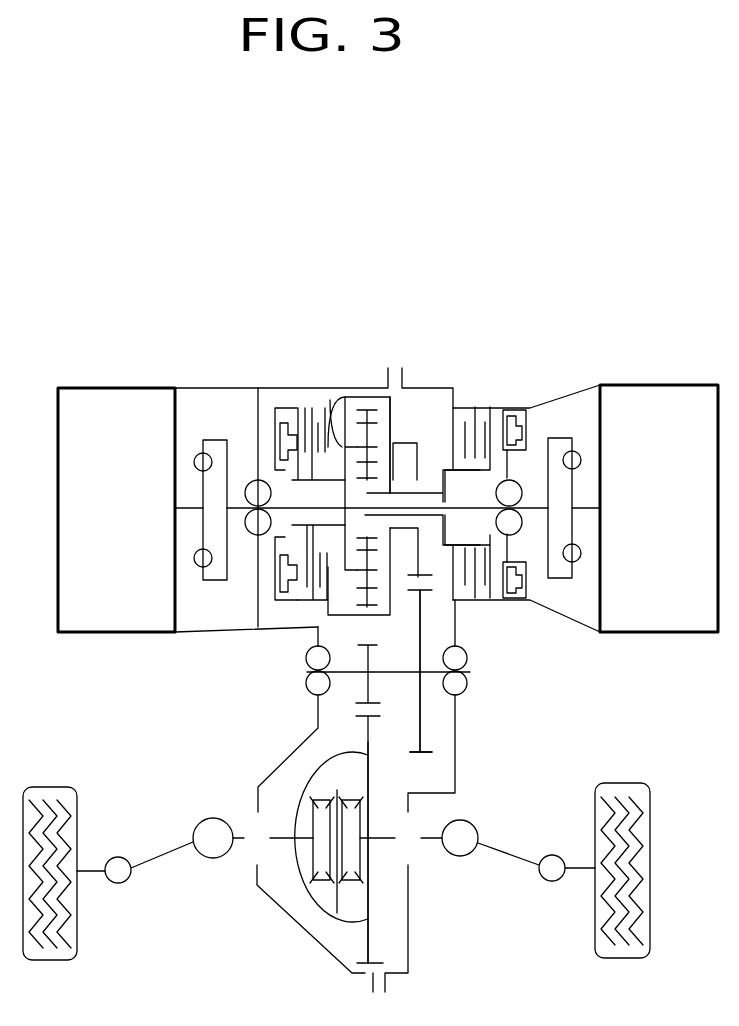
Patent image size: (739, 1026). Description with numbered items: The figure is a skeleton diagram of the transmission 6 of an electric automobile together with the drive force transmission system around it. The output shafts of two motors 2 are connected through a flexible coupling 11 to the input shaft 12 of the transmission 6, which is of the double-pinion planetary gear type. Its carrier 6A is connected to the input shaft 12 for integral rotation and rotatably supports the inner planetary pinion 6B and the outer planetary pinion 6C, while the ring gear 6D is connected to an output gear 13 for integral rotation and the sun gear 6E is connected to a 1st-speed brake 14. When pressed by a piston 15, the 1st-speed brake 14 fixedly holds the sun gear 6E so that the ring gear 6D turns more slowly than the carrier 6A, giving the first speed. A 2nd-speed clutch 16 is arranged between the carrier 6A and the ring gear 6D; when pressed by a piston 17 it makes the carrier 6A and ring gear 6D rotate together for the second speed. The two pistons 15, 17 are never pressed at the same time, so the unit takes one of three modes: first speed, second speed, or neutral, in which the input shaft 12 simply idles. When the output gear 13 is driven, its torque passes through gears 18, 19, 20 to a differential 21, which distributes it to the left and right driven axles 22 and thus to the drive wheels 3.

The motor 2 is at (90, 634).
The drive wheel 3 is at (48, 787).
The transmission 6 is at (347, 395).
The carrier 6A is at (333, 390).
The inner planetary pinion 6B is at (365, 560).
The outer planetary pinion 6C is at (370, 493).
The ring gear 6D is at (378, 390).
The sun gear 6E is at (393, 443).
The flexible coupling 11 is at (205, 440).
The input shaft 12 is at (283, 510).
The output gear 13 is at (420, 553).
The 1st-speed brake 14 is at (493, 408).
The piston 15 is at (517, 408).
The 2nd-speed clutch 16 is at (305, 405).
The piston 17 is at (280, 408).
The gear 18 is at (422, 728).
The gear 19 is at (357, 687).
The gear 20 is at (370, 742).
The differential 21 is at (325, 887).
The driven axle 22 is at (155, 862).